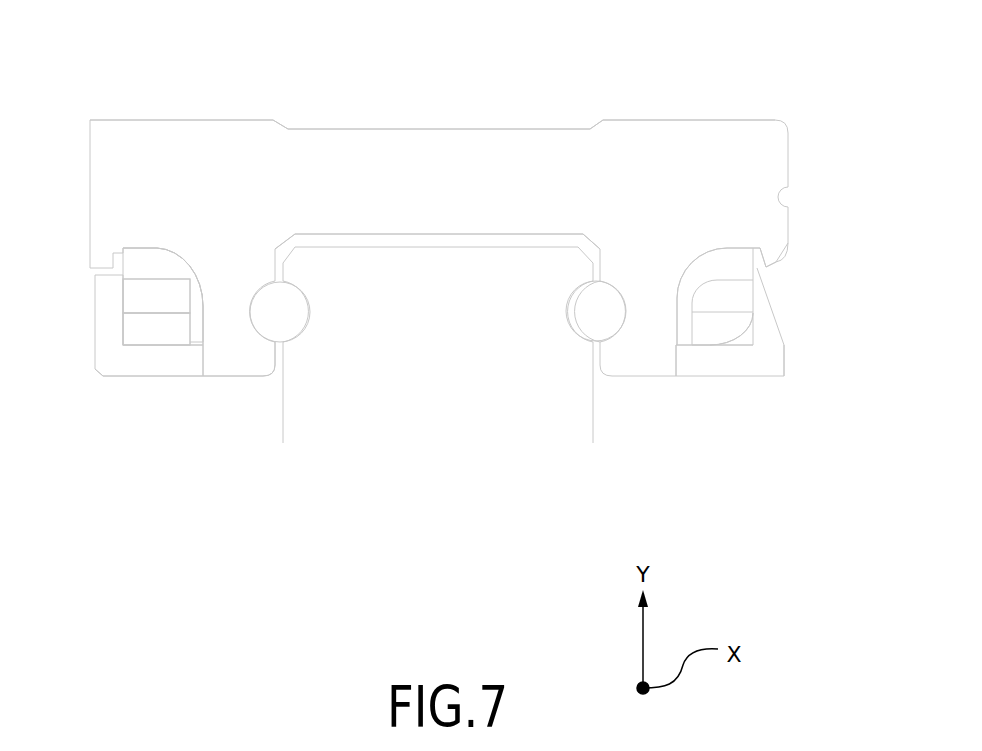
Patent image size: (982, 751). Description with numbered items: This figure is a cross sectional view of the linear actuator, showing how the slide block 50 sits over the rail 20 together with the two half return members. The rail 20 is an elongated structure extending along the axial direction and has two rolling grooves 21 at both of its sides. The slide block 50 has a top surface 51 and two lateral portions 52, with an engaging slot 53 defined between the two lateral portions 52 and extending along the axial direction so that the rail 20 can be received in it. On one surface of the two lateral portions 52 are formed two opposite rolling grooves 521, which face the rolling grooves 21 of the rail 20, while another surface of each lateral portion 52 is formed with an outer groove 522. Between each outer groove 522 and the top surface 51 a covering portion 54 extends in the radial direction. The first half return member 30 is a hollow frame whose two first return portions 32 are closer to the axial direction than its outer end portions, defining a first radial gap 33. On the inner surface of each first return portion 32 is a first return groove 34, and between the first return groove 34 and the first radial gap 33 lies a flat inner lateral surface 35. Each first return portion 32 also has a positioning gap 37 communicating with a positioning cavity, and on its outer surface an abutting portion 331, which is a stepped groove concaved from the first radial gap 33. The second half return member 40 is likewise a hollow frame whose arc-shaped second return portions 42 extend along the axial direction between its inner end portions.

The rail 20 is at (340, 471).
The rolling grooves 21 is at (565, 318).
The first half return member 30 is at (137, 396).
The first return portions 32 is at (173, 368).
The first radial gap 33 is at (760, 252).
The abutting portion 331 is at (773, 277).
The first return groove 34 is at (143, 343).
The inner lateral surface 35 is at (125, 272).
The positioning gap 37 is at (678, 361).
The second half return member 40 is at (136, 262).
The second return portions 42 is at (167, 273).
The slide block 50 is at (196, 106).
The top surface 51 is at (368, 174).
The lateral portions 52 is at (237, 350).
The rolling grooves 521 is at (275, 338).
The outer groove 522 is at (683, 277).
The engaging slot 53 is at (462, 236).
The covering portion 54 is at (773, 260).